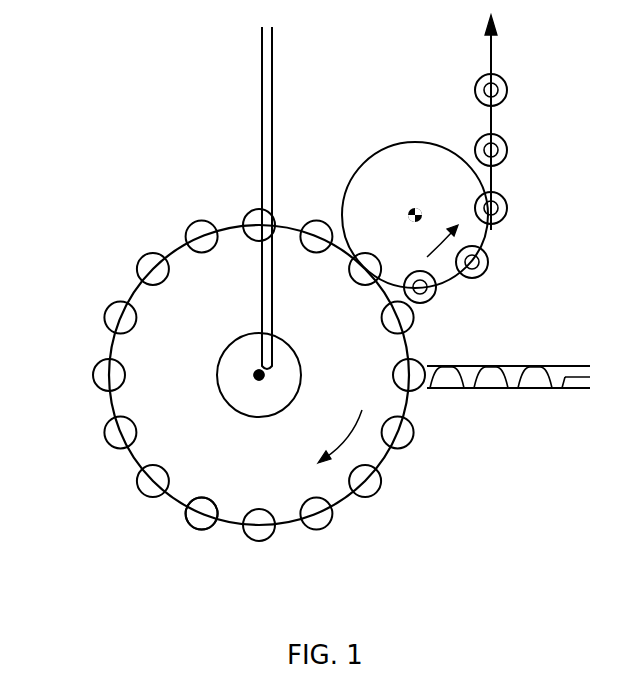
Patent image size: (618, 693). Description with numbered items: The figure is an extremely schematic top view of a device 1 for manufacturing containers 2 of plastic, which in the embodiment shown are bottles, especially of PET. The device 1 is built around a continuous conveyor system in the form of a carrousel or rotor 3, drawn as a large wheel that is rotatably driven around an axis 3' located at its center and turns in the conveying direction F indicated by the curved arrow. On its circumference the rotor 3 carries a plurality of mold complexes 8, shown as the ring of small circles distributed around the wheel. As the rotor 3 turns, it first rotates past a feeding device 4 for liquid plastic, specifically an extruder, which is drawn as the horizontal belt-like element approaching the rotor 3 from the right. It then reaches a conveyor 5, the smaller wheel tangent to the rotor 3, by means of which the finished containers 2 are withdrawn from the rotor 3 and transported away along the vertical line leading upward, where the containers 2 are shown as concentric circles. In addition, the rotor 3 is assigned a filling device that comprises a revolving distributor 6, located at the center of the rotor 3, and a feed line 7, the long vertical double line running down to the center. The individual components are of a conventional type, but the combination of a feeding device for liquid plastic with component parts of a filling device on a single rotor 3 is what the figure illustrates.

The device 1 is at (62, 246).
The containers 2 is at (508, 90).
The rotor 3 is at (249, 375).
The axis 3' is at (259, 398).
The feeding device 4 is at (516, 364).
The conveyor 5 is at (370, 163).
The revolving distributor 6 is at (256, 372).
The feed line 7 is at (273, 43).
The mold complexes 8 is at (193, 529).
The conveying direction F is at (378, 457).